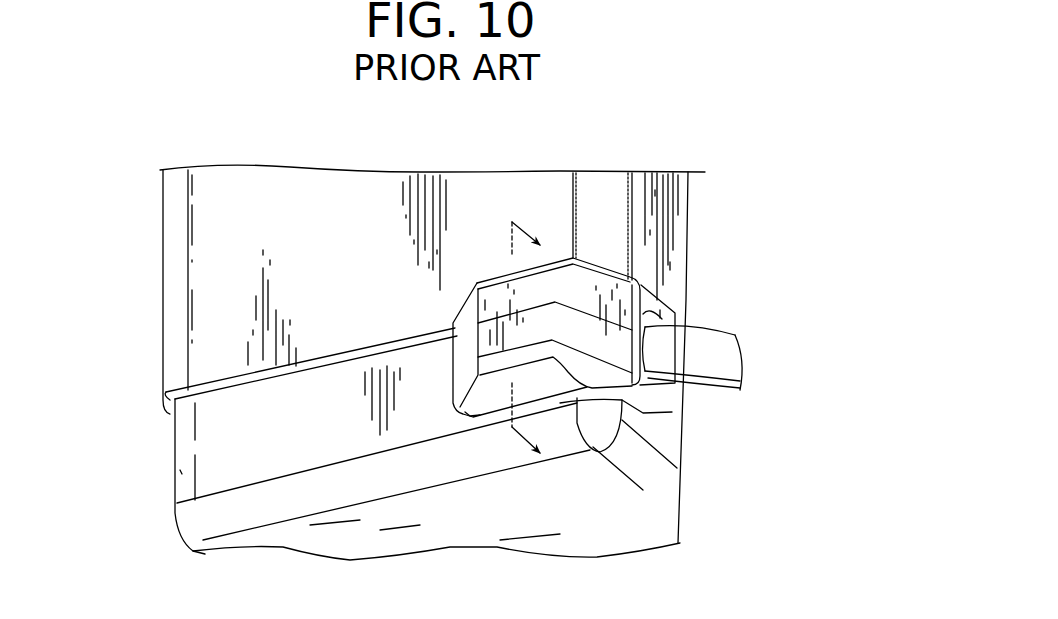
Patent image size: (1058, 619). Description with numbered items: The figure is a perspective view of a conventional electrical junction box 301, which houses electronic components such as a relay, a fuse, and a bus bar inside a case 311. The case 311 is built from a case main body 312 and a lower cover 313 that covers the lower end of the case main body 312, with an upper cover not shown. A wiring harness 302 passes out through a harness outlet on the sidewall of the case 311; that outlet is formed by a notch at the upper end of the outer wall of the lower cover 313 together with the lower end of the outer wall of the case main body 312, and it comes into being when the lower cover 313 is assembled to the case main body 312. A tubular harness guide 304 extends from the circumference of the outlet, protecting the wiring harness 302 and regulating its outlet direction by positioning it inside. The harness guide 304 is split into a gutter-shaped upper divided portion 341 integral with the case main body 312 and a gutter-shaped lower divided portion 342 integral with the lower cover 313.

The electrical junction box 301 is at (697, 103).
The case 311 is at (160, 223).
The case main body 312 is at (160, 288).
The lower cover 313 is at (174, 470).
The harness guide 304 is at (610, 264).
The wiring harness 302 is at (718, 351).
The upper divided portion 341 is at (492, 273).
The lower divided portion 342 is at (487, 400).